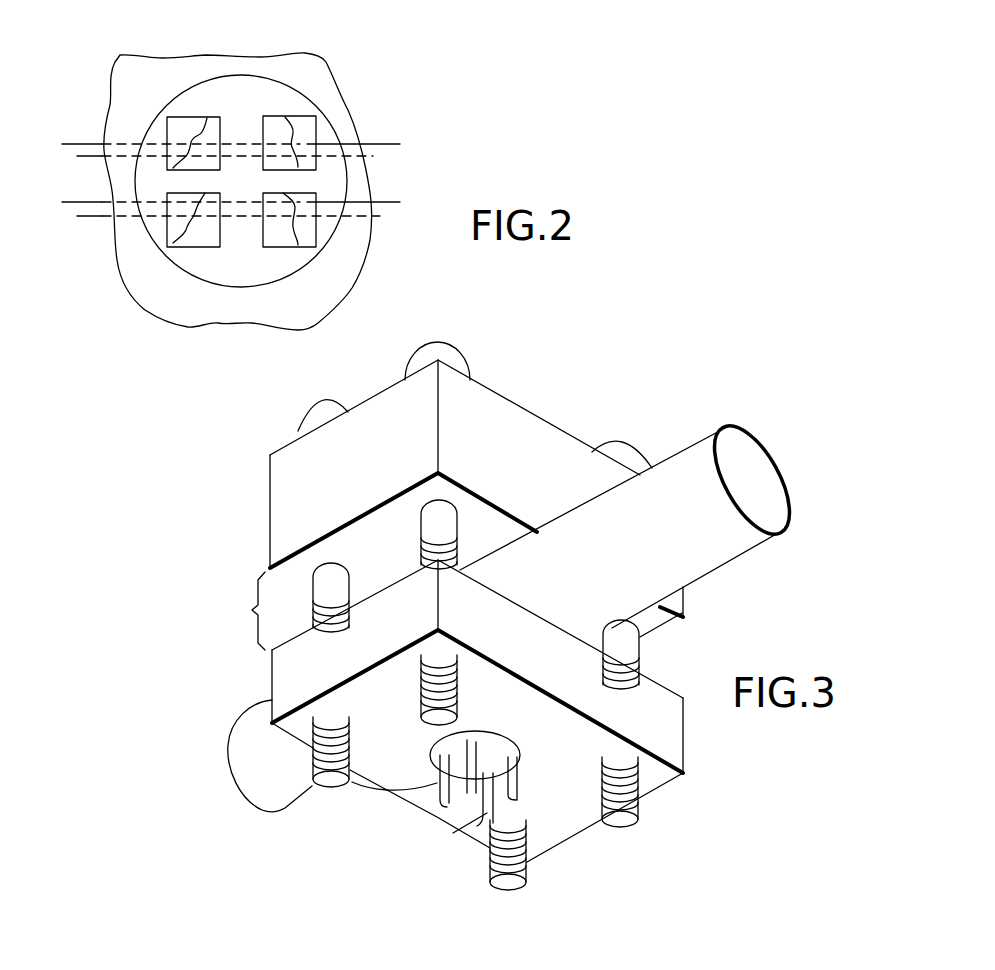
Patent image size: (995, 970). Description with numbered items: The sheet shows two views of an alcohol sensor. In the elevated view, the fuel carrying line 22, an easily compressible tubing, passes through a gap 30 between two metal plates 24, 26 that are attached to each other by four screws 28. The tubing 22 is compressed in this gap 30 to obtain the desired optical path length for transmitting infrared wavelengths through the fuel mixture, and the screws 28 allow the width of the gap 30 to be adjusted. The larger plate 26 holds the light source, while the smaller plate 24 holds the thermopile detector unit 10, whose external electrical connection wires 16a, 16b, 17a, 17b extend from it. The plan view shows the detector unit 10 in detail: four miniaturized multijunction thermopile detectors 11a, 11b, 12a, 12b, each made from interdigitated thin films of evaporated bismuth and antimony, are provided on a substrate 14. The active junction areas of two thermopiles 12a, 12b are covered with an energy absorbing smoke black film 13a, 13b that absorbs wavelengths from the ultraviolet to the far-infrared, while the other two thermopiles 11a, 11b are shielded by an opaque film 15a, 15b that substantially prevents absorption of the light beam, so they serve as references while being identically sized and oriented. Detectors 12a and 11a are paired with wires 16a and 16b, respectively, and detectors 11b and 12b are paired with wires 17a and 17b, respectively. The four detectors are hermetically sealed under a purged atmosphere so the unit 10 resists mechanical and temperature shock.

In FIG. 3, the thermopile detector unit 10 is at (520, 758).
In FIG. 2, the thermopile detector 11a is at (308, 137).
In FIG. 2, the thermopile detector 11b is at (205, 237).
In FIG. 2, the thermopile detector 12a is at (208, 145).
In FIG. 2, the thermopile detector 12b is at (305, 228).
In FIG. 2, the smoke black film 13a is at (180, 123).
In FIG. 2, the smoke black film 13b is at (280, 240).
In FIG. 2, the substrate 14 is at (240, 277).
In FIG. 2, the opaque film 15a is at (277, 130).
In FIG. 2, the opaque film 15b is at (173, 220).
In FIG. 2, the external electrical connection wire 16a is at (77, 156).
In FIG. 3, the external electrical connection wire 16a is at (437, 817).
In FIG. 2, the external electrical connection wire 16b is at (373, 156).
In FIG. 3, the external electrical connection wire 16b is at (478, 762).
In FIG. 2, the external electrical connection wire 17a is at (77, 216).
In FIG. 3, the external electrical connection wire 17a is at (480, 805).
In FIG. 2, the external electrical connection wire 17b is at (380, 216).
In FIG. 3, the external electrical connection wire 17b is at (517, 800).
In FIG. 3, the fuel carrying line 22 is at (675, 460).
In FIG. 2, the metal plate 24 is at (167, 298).
In FIG. 3, the metal plate 24 is at (287, 670).
In FIG. 3, the metal plate 26 is at (272, 517).
In FIG. 3, the screws 28 is at (428, 525).
In FIG. 3, the gap 30 is at (253, 610).